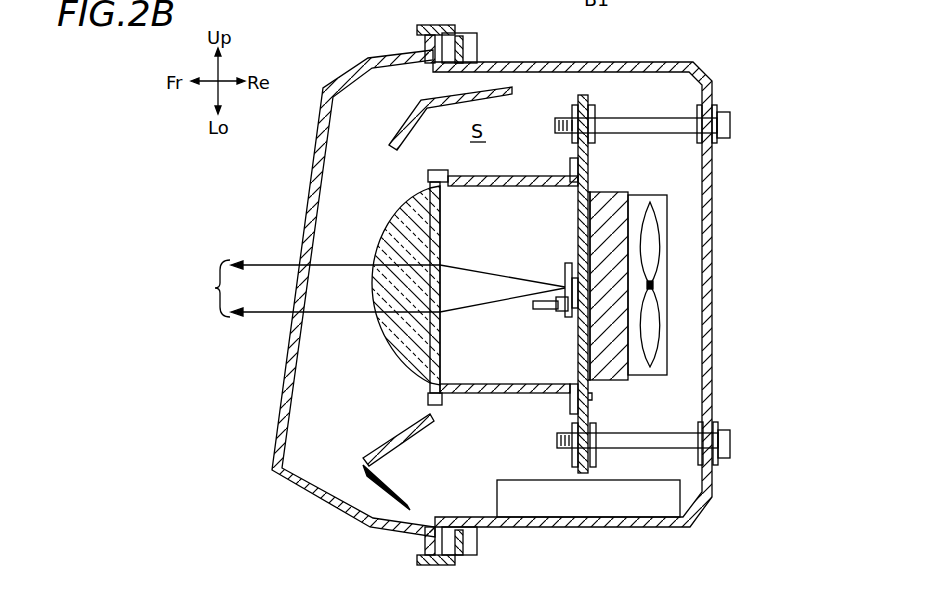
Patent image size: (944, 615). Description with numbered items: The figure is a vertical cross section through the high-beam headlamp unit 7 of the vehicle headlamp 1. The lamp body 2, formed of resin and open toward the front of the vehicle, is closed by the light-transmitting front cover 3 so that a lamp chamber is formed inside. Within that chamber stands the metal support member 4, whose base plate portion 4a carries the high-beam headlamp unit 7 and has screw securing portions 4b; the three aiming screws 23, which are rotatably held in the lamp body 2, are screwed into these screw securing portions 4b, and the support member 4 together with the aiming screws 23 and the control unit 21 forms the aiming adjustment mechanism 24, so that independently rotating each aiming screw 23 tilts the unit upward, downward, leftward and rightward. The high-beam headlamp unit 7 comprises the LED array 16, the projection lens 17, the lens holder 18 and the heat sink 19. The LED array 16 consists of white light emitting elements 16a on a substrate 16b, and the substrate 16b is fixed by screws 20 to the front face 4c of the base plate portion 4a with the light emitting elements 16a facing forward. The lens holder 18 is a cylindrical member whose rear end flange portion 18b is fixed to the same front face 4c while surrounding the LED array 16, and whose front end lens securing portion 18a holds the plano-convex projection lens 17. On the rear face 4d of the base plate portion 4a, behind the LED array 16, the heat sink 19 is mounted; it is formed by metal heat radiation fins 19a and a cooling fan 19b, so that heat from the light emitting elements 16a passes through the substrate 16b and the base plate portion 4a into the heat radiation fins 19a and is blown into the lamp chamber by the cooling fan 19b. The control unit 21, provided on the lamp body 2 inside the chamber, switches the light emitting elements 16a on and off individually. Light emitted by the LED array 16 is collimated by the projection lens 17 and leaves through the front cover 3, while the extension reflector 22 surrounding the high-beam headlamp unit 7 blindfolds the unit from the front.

The vehicle headlamp 1 is at (318, 36).
The lamp body 2 is at (593, 62).
The front cover 3 is at (385, 532).
The support member 4 is at (590, 219).
The base plate portion 4a is at (583, 472).
The screw securing portions 4b is at (583, 112).
The front face 4c is at (577, 421).
The rear face 4d is at (592, 397).
The high-beam headlamp unit 7 is at (519, 170).
The LED array 16 is at (785, 163).
The light emitting elements 16a is at (608, 270).
The substrate 16b is at (576, 237).
The projection lens 17 is at (423, 372).
The lens holder 18 is at (484, 395).
The lens securing portion 18a is at (445, 400).
The flange portion 18b is at (593, 183).
The heat sink 19 is at (785, 285).
The heat radiation fins 19a is at (624, 333).
The cooling fan 19b is at (654, 346).
The screws 20 is at (560, 312).
The control unit 21 is at (668, 497).
The extension reflector 22 is at (405, 120).
The aiming screws 23 is at (728, 123).
The aiming adjustment mechanism 24 is at (785, 83).